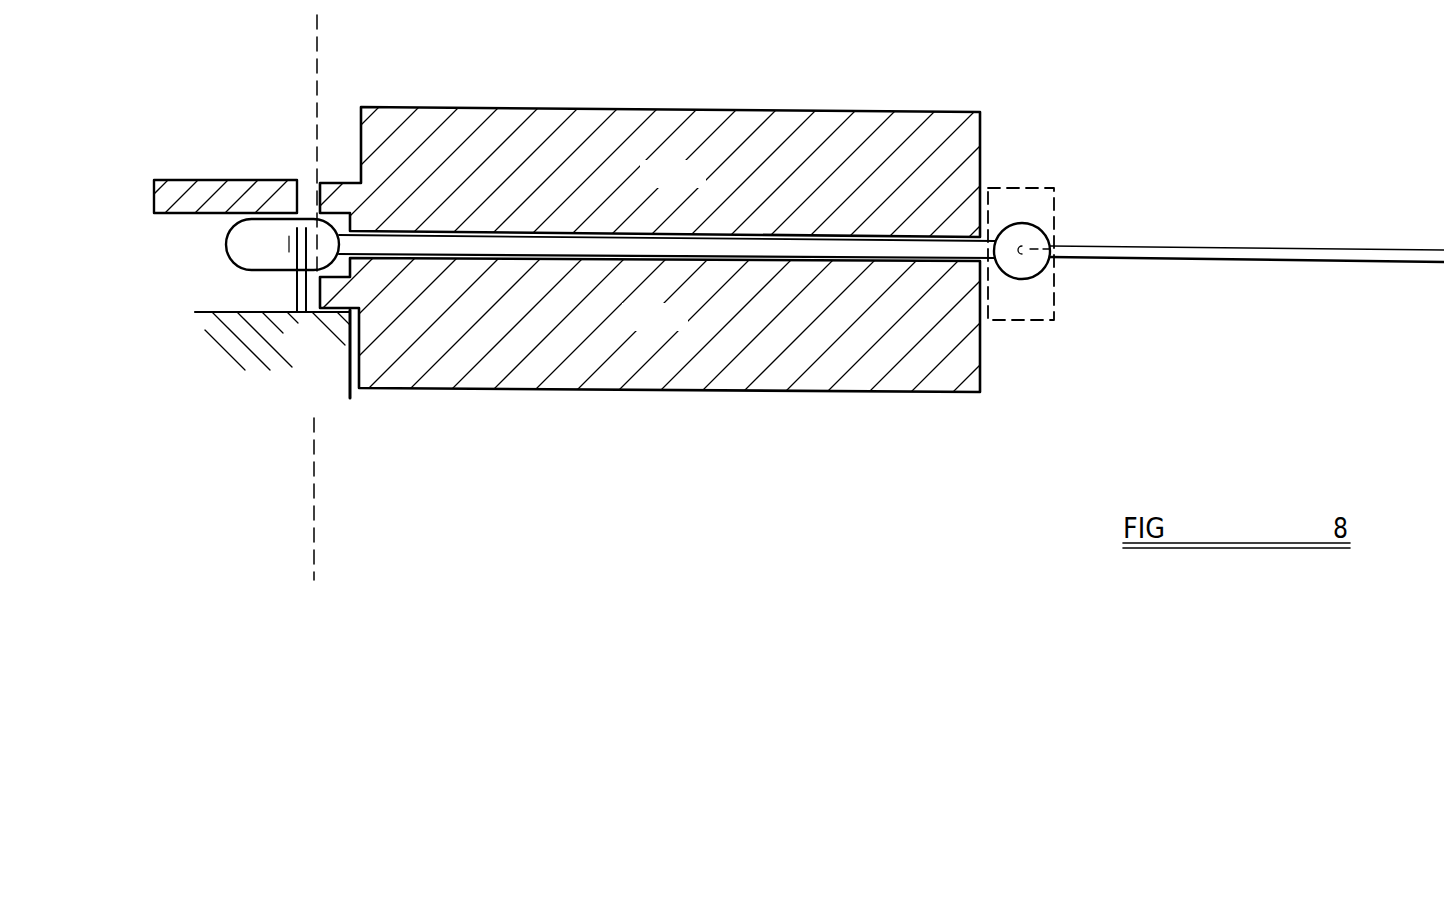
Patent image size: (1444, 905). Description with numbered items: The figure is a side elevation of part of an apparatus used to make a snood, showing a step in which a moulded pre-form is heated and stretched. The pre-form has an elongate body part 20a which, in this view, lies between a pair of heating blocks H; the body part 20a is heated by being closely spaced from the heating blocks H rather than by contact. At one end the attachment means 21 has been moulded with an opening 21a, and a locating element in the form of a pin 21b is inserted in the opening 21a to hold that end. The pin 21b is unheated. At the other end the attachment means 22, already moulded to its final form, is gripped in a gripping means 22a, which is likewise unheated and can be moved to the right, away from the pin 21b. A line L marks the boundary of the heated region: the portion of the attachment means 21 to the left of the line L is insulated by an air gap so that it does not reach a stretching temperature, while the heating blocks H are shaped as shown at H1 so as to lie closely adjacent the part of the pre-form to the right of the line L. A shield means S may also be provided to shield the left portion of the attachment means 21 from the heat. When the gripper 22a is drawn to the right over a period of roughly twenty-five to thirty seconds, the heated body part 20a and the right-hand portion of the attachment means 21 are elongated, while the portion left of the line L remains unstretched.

The body part 20a is at (583, 243).
The attachment means 21 is at (229, 256).
The opening 21a is at (293, 250).
The pin 21b is at (293, 292).
The attachment means 22 is at (1028, 280).
The gripping means 22a is at (1013, 188).
The shield means S is at (170, 180).
The heating blocks H is at (665, 246).
The configured portion of heating blocks H1 is at (351, 182).
The line L is at (322, 33).